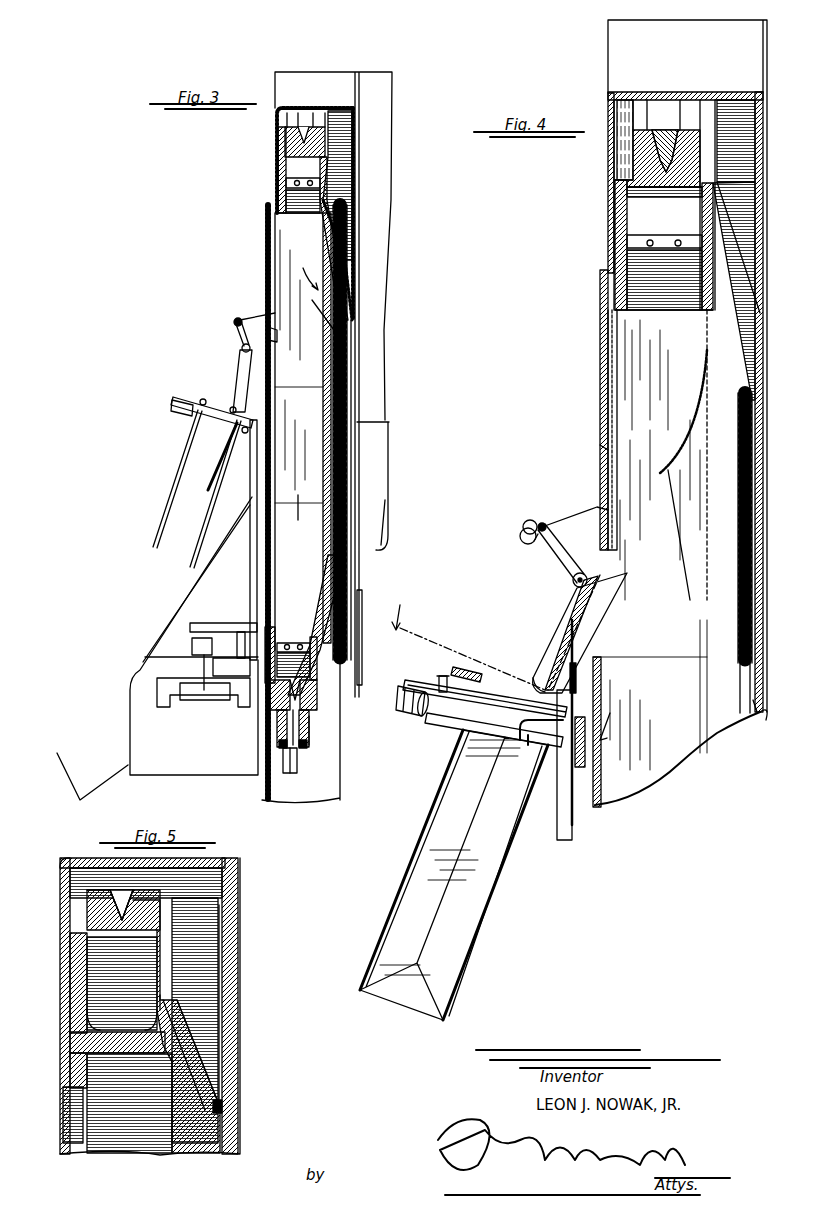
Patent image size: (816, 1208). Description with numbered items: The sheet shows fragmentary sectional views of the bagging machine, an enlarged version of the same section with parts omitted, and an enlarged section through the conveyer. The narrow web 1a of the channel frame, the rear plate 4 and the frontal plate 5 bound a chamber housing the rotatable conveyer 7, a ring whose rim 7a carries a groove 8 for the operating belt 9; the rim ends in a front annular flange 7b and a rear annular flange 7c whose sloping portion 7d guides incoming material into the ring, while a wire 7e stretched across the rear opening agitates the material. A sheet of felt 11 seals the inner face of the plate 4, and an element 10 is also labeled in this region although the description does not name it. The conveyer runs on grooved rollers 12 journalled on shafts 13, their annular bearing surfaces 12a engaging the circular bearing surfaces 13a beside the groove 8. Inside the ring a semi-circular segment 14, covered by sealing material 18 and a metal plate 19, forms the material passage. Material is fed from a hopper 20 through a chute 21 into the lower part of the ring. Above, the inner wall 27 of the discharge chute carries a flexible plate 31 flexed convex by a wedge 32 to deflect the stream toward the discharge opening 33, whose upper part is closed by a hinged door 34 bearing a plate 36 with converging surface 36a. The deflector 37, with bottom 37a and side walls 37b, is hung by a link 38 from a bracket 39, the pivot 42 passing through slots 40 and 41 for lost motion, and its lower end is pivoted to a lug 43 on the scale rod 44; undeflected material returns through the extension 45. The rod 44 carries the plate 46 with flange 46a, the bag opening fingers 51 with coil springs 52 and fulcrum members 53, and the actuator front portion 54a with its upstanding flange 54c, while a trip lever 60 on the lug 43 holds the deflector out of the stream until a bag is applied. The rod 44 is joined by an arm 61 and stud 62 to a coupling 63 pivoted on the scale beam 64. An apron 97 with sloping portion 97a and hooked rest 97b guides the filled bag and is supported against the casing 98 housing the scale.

In FIG. 3, the web 1a is at (303, 112).
In FIG. 4, the web 1a is at (660, 125).
In FIG. 5, the web 1a is at (80, 858).
In FIG. 3, the plate 4 is at (358, 631).
In FIG. 4, the plate 4 is at (762, 716).
In FIG. 5, the plate 4 is at (224, 1108).
In FIG. 3, the frontal plate 5 is at (263, 752).
In FIG. 4, the frontal plate 5 is at (606, 222).
In FIG. 5, the frontal plate 5 is at (62, 1074).
In FIG. 3, the rotatable conveyer 7 is at (282, 150).
In FIG. 4, the rotatable conveyer 7 is at (623, 175).
In FIG. 5, the rotatable conveyer 7 is at (150, 920).
In FIG. 4, the rim 7a is at (640, 128).
In FIG. 5, the rim 7a is at (95, 902).
In FIG. 3, the annular flange 7b is at (278, 195).
In FIG. 4, the annular flange 7b is at (612, 243).
In FIG. 5, the annular flange 7b is at (80, 962).
In FIG. 3, the annular flange 7c is at (324, 186).
In FIG. 4, the annular flange 7c is at (700, 225).
In FIG. 5, the annular flange 7c is at (157, 985).
In FIG. 3, the sloping portion 7d is at (334, 236).
In FIG. 4, the sloping portion 7d is at (730, 280).
In FIG. 5, the sloping portion 7d is at (190, 1075).
In FIG. 3, the wire 7e is at (352, 376).
In FIG. 3, the groove 8 is at (287, 133).
In FIG. 4, the groove 8 is at (655, 152).
In FIG. 5, the groove 8 is at (150, 910).
In FIG. 3, the operating belt 9 is at (337, 185).
In FIG. 4, the operating belt 9 is at (664, 135).
In FIG. 5, the operating belt 9 is at (118, 893).
In FIG. 3, the spring 10 is at (351, 337).
In FIG. 4, the spring 10 is at (742, 700).
In FIG. 3, the sheet of felt 11 is at (350, 478).
In FIG. 4, the sheet of felt 11 is at (748, 722).
In FIG. 5, the sheet of felt 11 is at (222, 1017).
In FIG. 3, the rollers 12 is at (308, 745).
In FIG. 3, the annular bearing surfaces 12a is at (290, 760).
In FIG. 3, the shafts 13 is at (270, 712).
In FIG. 3, the circular bearing surfaces 13a is at (312, 712).
In FIG. 5, the segment 14 is at (72, 1040).
In FIG. 5, the sealing material 18 is at (163, 1003).
In FIG. 5, the metal plate 19 is at (85, 1012).
In FIG. 3, the hopper 20 is at (378, 280).
In FIG. 3, the chute 21 is at (376, 523).
In FIG. 4, the inner wall 27 is at (700, 738).
In FIG. 3, the plate 31 is at (303, 270).
In FIG. 4, the plate 31 is at (694, 440).
In FIG. 3, the wedge 32 is at (312, 318).
In FIG. 4, the wedge 32 is at (683, 488).
In FIG. 3, the discharge opening 33 is at (270, 360).
In FIG. 3, the door 34 is at (268, 270).
In FIG. 4, the door 34 is at (600, 408).
In FIG. 3, the plate 36 is at (284, 339).
In FIG. 4, the plate 36 is at (598, 506).
In FIG. 4, the surface 36a is at (587, 440).
In FIG. 3, the deflector 37 is at (238, 372).
In FIG. 4, the deflector 37 is at (568, 612).
In FIG. 4, the bottom 37a is at (578, 603).
In FIG. 4, the side walls 37b is at (548, 650).
In FIG. 3, the link 38 is at (242, 348).
In FIG. 4, the link 38 is at (572, 578).
In FIG. 3, the bracket 39 is at (234, 322).
In FIG. 4, the bracket 39 is at (520, 537).
In FIG. 4, the slot 40 is at (532, 545).
In FIG. 4, the slot 41 is at (523, 522).
In FIG. 4, the pivot 42 is at (541, 522).
In FIG. 4, the lug 43 is at (582, 675).
In FIG. 3, the scale rod 44 is at (249, 565).
In FIG. 4, the scale rod 44 is at (565, 812).
In FIG. 3, the extension 45 is at (292, 518).
In FIG. 4, the extension 45 is at (658, 755).
In FIG. 4, the plate 46 is at (478, 670).
In FIG. 4, the flange 46a is at (585, 737).
In FIG. 3, the bag opening finger 51 is at (162, 515).
In FIG. 4, the bag opening finger 51 is at (405, 877).
In FIG. 4, the coil springs 52 is at (490, 706).
In FIG. 4, the fulcrum member 53 is at (480, 728).
In FIG. 4, the front portion 54a is at (405, 703).
In FIG. 4, the upstanding flange 54c is at (440, 676).
In FIG. 3, the trip lever 60 is at (225, 455).
In FIG. 4, the trip lever 60 is at (520, 745).
In FIG. 3, the arm 61 is at (225, 630).
In FIG. 3, the stud 62 is at (190, 648).
In FIG. 3, the coupling 63 is at (236, 657).
In FIG. 3, the scale beam 64 is at (190, 705).
In FIG. 3, the apron 97 is at (130, 718).
In FIG. 3, the sloping portion 97a is at (160, 590).
In FIG. 3, the hooked shaped rest 97b is at (92, 776).
In FIG. 3, the casing 98 is at (188, 655).